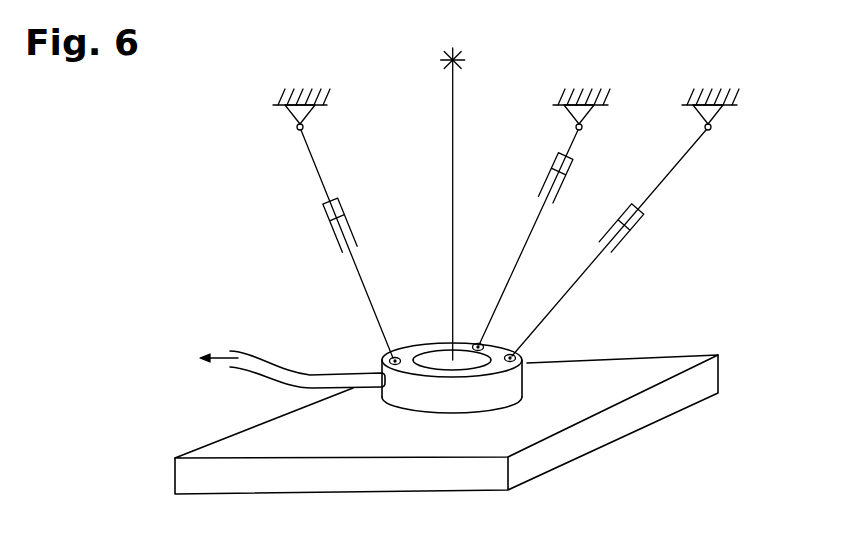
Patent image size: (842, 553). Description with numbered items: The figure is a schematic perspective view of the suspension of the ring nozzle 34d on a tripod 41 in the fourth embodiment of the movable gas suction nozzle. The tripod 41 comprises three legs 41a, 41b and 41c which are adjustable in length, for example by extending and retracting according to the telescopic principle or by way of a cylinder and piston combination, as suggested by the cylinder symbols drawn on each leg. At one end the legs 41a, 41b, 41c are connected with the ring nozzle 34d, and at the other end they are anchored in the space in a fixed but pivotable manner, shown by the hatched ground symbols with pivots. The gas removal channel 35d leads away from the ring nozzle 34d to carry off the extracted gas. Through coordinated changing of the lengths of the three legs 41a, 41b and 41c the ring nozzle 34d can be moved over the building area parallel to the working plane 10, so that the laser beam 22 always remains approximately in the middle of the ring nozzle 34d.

The working plane 10 is at (258, 432).
The laser beam 22 is at (453, 157).
The ring nozzle 34d is at (505, 381).
The gas removal channel 35d is at (307, 380).
The tripod 41 is at (293, 154).
The first leg 41a is at (368, 298).
The second leg 41b is at (518, 265).
The third leg 41c is at (662, 182).